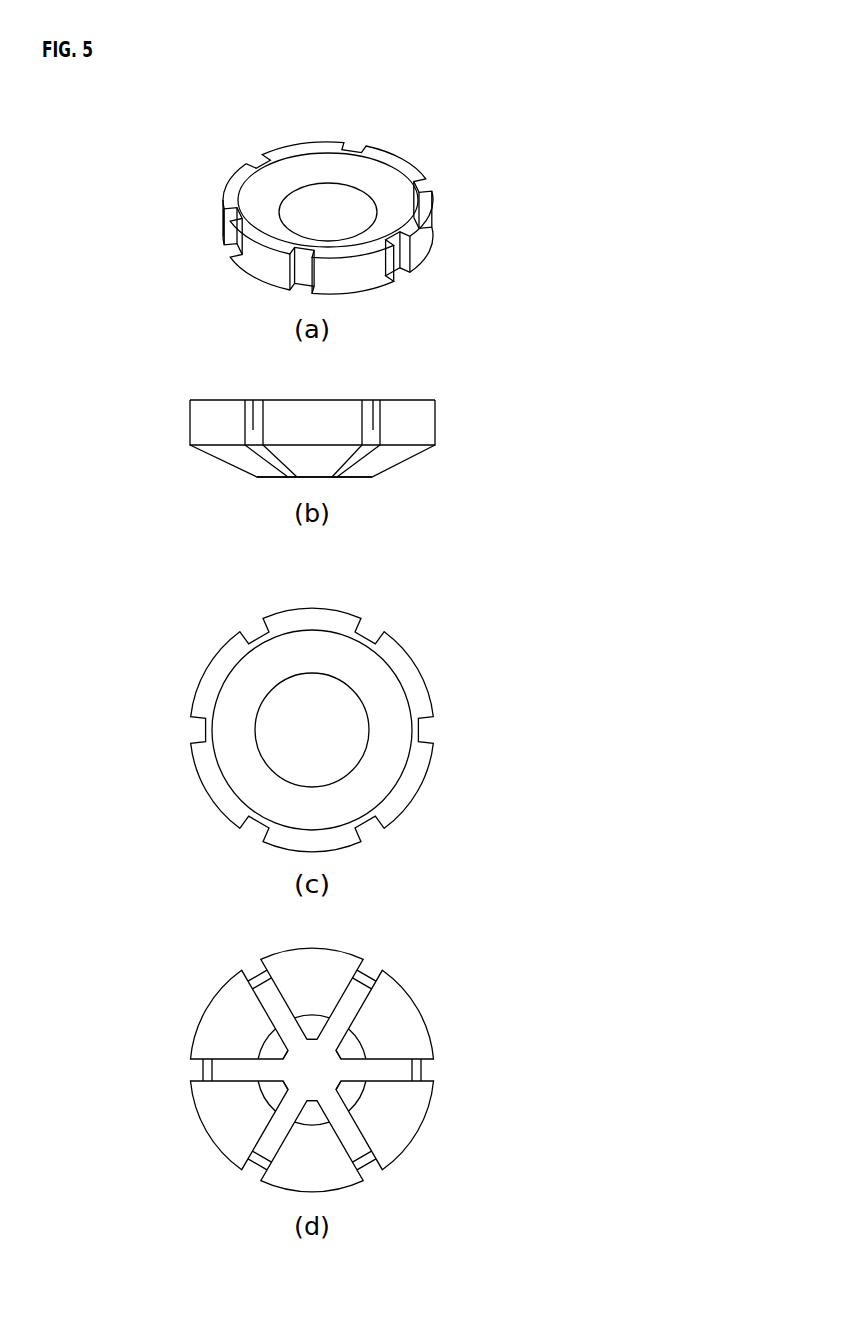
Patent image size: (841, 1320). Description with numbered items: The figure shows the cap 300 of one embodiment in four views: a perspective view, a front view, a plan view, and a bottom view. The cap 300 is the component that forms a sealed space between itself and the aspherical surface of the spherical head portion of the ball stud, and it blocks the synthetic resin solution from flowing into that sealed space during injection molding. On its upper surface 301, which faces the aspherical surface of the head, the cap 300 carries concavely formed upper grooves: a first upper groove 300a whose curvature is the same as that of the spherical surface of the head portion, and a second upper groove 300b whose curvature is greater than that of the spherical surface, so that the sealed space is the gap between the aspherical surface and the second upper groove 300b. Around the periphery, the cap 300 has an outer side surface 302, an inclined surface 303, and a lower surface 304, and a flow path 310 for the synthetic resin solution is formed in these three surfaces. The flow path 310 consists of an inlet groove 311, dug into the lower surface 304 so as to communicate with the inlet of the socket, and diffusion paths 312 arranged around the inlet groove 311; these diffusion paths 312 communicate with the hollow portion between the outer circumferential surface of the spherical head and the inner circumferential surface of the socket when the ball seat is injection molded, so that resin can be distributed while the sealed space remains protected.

The cap 300 is at (196, 180).
The first upper groove 300a is at (380, 177).
The second upper groove 300b is at (327, 213).
The upper surface 301 is at (220, 398).
The outer side surface 302 is at (190, 420).
The inclined surface 303 is at (223, 458).
The lower surface 304 is at (273, 477).
The flow path 310 is at (626, 968).
The inlet groove 311 is at (312, 1072).
The diffusion paths 312 is at (397, 268).